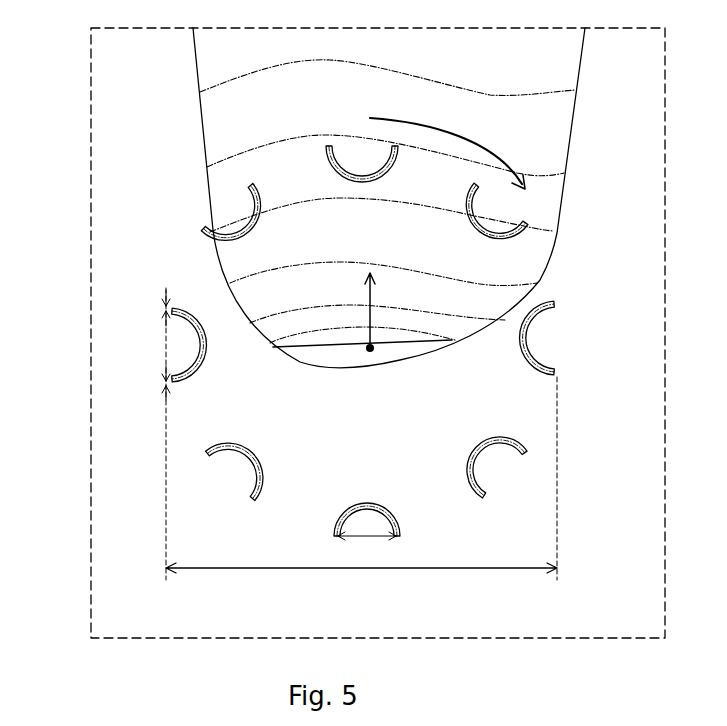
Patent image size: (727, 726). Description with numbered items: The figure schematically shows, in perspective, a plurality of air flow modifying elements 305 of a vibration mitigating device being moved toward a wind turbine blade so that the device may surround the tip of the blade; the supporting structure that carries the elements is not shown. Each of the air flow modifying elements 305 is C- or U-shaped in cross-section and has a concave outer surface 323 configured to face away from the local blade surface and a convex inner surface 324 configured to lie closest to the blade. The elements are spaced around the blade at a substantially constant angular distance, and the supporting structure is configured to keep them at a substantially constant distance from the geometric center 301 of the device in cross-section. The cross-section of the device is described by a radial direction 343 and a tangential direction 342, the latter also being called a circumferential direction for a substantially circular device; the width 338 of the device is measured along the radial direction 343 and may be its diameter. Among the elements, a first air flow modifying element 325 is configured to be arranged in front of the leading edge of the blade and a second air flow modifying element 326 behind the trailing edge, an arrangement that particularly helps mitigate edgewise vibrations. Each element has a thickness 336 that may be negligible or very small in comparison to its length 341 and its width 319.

The geometric center 301 is at (377, 357).
The air flow modifying elements 305 is at (205, 227).
The width 319 is at (350, 548).
The concave outer surface 323 is at (497, 229).
The inner surface 324 is at (225, 444).
The first air flow modifying element 325 is at (190, 323).
The second air flow modifying element 326 is at (543, 356).
The thickness 336 is at (164, 379).
The width 338 is at (350, 570).
The length 341 is at (166, 304).
The tangential direction 342 is at (452, 130).
The radial direction 343 is at (377, 318).